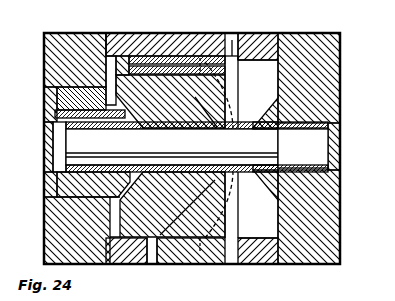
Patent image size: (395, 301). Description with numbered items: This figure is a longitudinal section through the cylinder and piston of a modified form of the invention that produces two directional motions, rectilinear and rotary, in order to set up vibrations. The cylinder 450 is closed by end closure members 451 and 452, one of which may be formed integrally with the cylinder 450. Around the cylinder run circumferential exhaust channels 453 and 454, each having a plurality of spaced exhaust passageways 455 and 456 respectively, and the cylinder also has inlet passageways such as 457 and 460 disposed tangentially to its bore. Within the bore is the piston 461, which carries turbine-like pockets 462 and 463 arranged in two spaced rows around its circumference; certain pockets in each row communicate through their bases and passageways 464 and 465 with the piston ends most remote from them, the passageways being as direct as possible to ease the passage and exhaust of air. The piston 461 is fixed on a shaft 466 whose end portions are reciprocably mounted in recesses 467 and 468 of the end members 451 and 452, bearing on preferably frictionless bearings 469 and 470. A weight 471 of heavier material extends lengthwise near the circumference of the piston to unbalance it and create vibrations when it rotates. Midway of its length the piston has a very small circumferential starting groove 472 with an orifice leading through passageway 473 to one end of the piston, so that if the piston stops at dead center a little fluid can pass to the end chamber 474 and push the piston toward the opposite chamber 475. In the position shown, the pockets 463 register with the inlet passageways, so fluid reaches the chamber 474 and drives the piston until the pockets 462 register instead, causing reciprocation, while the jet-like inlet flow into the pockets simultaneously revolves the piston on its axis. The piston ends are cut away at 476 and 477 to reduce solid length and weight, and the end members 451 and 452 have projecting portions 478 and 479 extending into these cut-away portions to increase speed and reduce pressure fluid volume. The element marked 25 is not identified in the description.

The bearing assembly 25 is at (200, 57).
The cylinder 450 is at (280, 45).
The end closure member 451 is at (52, 44).
The end closure member 452 is at (340, 40).
The exhaust channel 453 is at (150, 56).
The exhaust channel 454 is at (246, 58).
The exhaust passageways 455 is at (147, 57).
The exhaust passageways 456 is at (246, 40).
The inlet passageway 457 is at (244, 50).
The inlet passageway 460 is at (137, 252).
The piston 461 is at (186, 170).
The turbine-like pockets 462 is at (170, 66).
The turbine-like pockets 463 is at (232, 62).
The passageway 464 is at (191, 132).
The passageway 465 is at (151, 170).
The shaft 466 is at (66, 168).
The recess 467 is at (56, 148).
The recess 468 is at (330, 149).
The bearing 469 is at (58, 115).
The bearing 470 is at (330, 117).
The weight 471 is at (86, 45).
The starting groove 472 is at (232, 264).
The passageway 473 is at (226, 215).
The chamber 474 is at (108, 212).
The chamber 475 is at (266, 216).
The cut away portion 476 is at (80, 92).
The cut away portion 477 is at (232, 106).
The projecting portion 478 is at (72, 110).
The projecting portion 479 is at (282, 100).